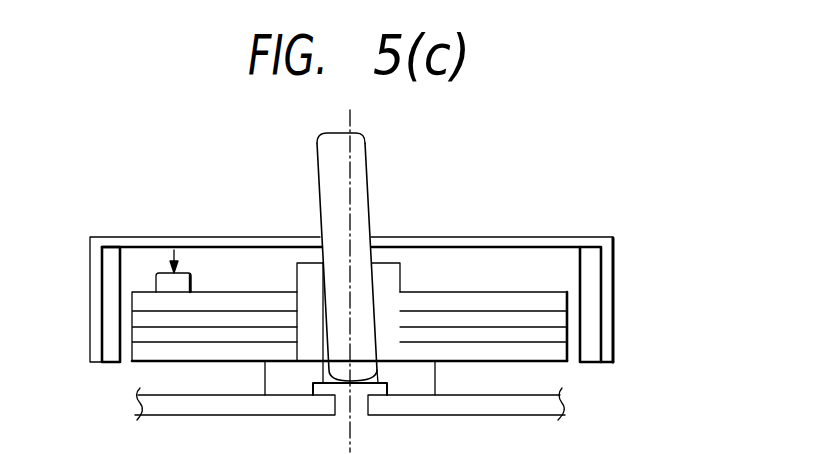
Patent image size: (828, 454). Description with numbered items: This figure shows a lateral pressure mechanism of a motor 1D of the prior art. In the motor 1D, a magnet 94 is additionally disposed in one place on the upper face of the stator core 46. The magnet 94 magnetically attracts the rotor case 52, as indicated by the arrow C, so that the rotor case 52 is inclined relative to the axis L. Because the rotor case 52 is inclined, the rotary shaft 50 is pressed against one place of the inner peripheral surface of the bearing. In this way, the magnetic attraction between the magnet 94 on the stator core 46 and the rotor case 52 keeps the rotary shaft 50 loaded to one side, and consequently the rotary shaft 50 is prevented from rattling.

The motor 1D is at (552, 193).
The stator core 46 is at (508, 337).
The rotary shaft 50 is at (362, 192).
The rotor case 52 is at (233, 242).
The magnet 94 is at (195, 283).
The arrow C is at (174, 242).
The center axis L is at (352, 118).